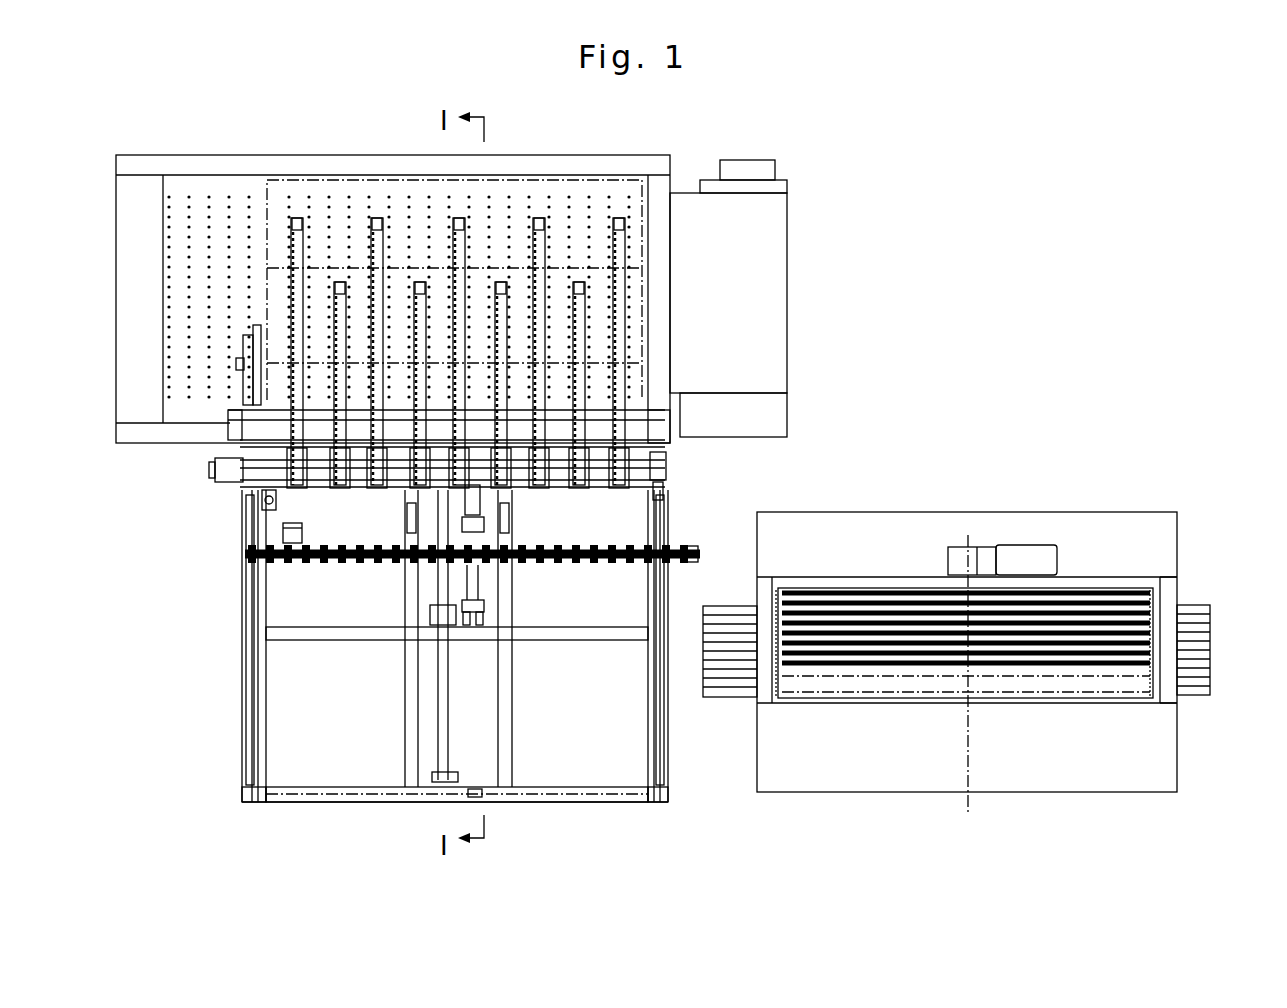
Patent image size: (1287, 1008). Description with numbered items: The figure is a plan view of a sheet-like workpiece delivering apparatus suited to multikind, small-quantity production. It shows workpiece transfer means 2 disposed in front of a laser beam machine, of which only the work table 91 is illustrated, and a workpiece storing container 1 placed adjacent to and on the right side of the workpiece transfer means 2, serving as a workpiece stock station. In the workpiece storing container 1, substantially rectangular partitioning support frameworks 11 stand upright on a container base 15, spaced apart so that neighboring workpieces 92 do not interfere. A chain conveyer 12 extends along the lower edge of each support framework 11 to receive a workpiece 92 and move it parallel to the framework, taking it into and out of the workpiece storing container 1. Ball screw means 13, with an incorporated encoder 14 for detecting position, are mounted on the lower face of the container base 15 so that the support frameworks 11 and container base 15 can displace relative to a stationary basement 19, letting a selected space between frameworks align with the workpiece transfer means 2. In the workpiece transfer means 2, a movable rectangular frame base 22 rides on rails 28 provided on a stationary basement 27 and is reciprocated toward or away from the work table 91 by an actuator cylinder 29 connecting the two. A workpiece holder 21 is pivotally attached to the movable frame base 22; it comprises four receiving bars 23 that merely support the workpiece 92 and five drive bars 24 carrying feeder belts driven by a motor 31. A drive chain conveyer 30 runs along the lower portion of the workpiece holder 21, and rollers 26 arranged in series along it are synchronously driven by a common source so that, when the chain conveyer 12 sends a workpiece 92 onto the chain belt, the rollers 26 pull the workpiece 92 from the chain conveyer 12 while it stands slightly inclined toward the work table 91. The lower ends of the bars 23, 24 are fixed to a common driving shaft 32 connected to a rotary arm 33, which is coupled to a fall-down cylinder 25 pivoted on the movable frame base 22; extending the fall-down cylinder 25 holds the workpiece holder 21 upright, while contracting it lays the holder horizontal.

The workpiece storing container 1 is at (821, 506).
The workpiece transfer means 2 is at (299, 630).
The partitioning support framework 11 is at (785, 703).
The chain conveyer 12 is at (1200, 610).
The ball screw means 13 is at (970, 740).
The encoder 14 is at (1000, 547).
The container base 15 is at (1167, 697).
The stationary basement 19 is at (888, 795).
The workpiece holder 21 is at (636, 301).
The movable frame base 22 is at (608, 635).
The receiving bar 23 is at (580, 372).
The drive bar 24 is at (620, 348).
The fall-down cylinder 25 is at (472, 585).
The roller 26 is at (632, 545).
The stationary basement 27 is at (322, 790).
The rail 28 is at (258, 757).
The actuator cylinder 29 is at (452, 738).
The drive chain conveyer 30 is at (683, 557).
The motor 31 is at (233, 485).
The common driving shaft 32 is at (275, 498).
The rotary arm 33 is at (662, 470).
The work table 91 is at (171, 164).
The workpiece 92 is at (280, 187).